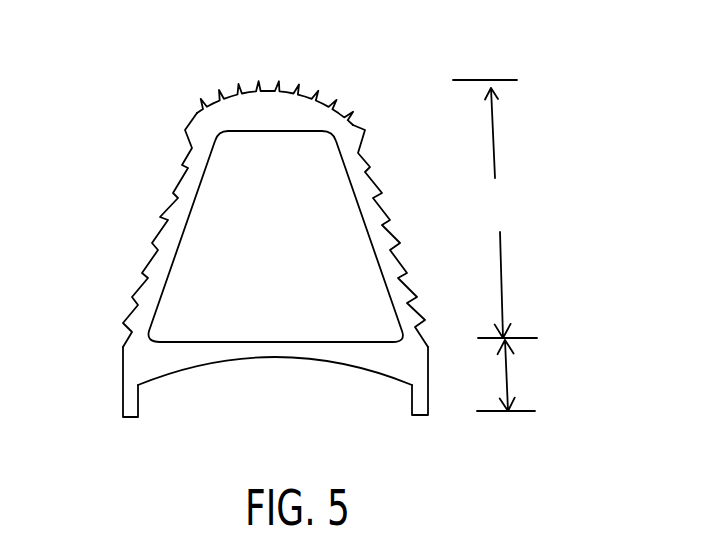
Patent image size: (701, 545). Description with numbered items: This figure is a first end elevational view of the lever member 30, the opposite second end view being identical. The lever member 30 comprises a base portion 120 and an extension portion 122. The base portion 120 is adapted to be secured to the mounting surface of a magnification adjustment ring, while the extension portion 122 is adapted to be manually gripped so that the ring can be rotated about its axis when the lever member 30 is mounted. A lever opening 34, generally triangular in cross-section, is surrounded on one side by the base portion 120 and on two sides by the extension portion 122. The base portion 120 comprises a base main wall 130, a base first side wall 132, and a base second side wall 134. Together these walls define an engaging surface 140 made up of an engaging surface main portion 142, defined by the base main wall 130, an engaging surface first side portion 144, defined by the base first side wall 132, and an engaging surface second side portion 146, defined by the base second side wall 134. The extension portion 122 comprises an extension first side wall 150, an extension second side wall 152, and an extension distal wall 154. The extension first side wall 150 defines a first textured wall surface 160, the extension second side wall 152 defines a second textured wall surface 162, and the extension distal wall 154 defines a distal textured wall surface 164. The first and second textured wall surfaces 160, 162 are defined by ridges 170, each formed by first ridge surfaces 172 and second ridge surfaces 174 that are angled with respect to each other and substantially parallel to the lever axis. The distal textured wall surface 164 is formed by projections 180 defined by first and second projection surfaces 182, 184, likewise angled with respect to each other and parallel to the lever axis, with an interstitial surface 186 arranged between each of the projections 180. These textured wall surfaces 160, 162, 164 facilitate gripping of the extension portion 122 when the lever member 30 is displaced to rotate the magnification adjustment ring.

The lever member 30 is at (174, 117).
The lever opening 34 is at (302, 227).
The base portion 120 is at (508, 372).
The extension portion 122 is at (495, 209).
The base main wall 130 is at (237, 347).
The base first side wall 132 is at (130, 402).
The base second side wall 134 is at (417, 397).
The engaging surface 140 is at (294, 374).
The engaging surface main portion 142 is at (331, 368).
The engaging surface first side portion 144 is at (137, 403).
The engaging surface second side portion 146 is at (413, 402).
The extension first side wall 150 is at (177, 210).
The extension second side wall 152 is at (376, 214).
The extension distal wall 154 is at (278, 98).
The first textured wall surface 160 is at (149, 255).
The second textured wall surface 162 is at (457, 212).
The distal textured wall surface 164 is at (245, 88).
The ridges 170 is at (408, 297).
The first ridge surfaces 172 is at (364, 145).
The second ridge surfaces 174 is at (368, 168).
The projections 180 is at (302, 90).
The first projection surface 182 is at (351, 112).
The second projection surface 184 is at (356, 122).
The interstitial surface 186 is at (331, 101).